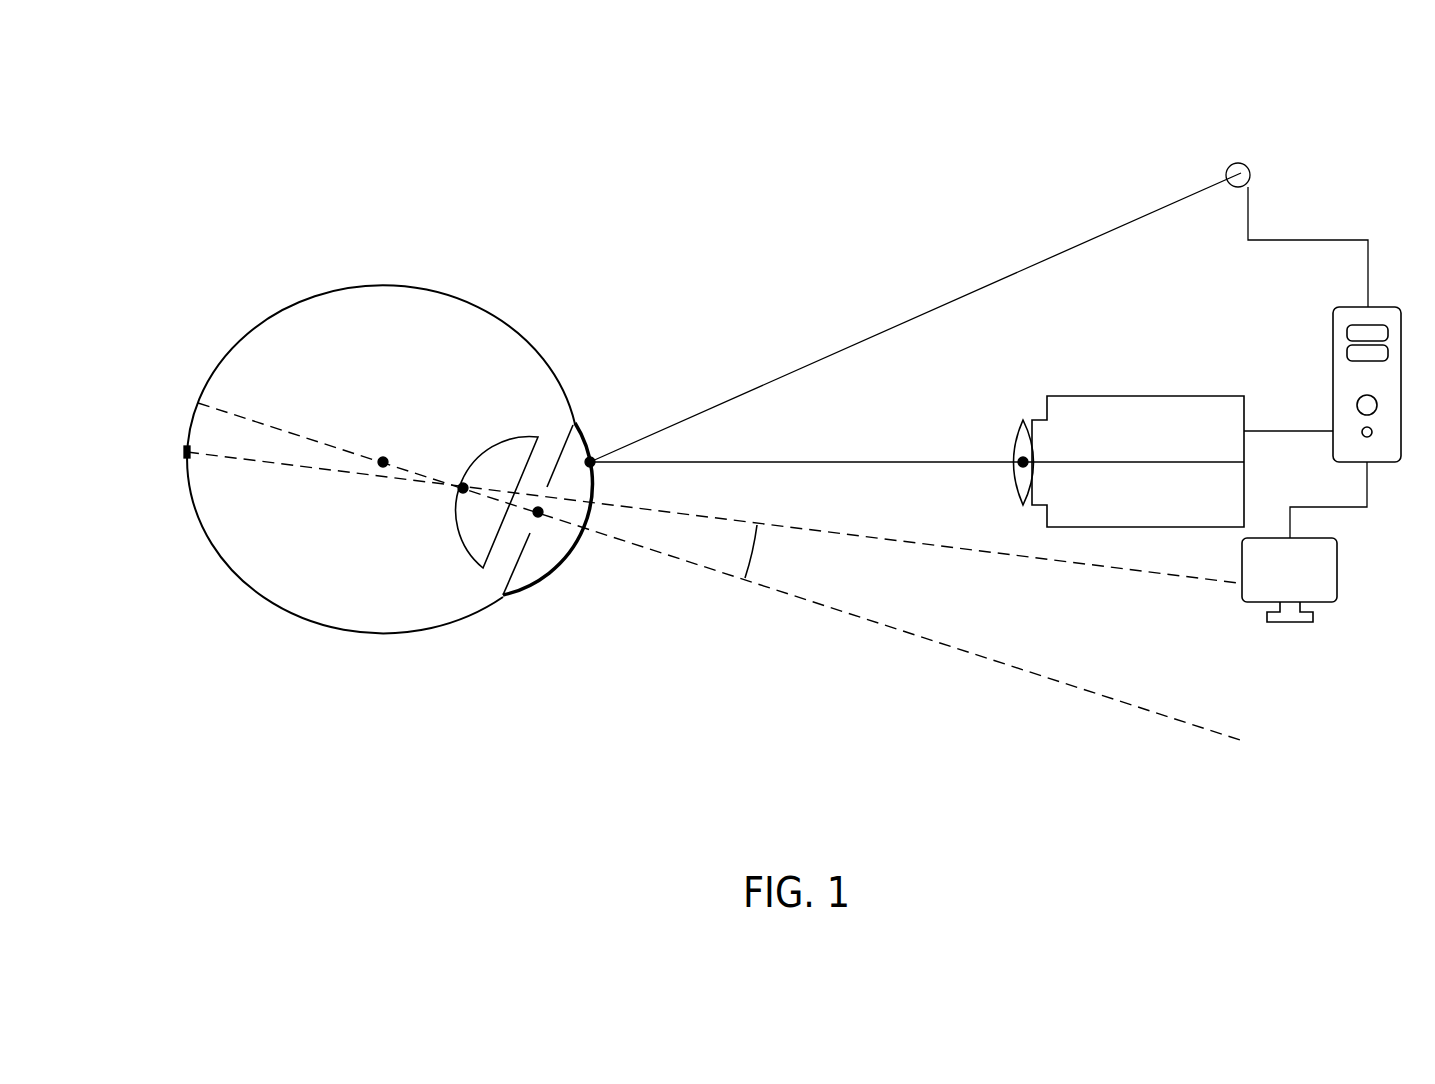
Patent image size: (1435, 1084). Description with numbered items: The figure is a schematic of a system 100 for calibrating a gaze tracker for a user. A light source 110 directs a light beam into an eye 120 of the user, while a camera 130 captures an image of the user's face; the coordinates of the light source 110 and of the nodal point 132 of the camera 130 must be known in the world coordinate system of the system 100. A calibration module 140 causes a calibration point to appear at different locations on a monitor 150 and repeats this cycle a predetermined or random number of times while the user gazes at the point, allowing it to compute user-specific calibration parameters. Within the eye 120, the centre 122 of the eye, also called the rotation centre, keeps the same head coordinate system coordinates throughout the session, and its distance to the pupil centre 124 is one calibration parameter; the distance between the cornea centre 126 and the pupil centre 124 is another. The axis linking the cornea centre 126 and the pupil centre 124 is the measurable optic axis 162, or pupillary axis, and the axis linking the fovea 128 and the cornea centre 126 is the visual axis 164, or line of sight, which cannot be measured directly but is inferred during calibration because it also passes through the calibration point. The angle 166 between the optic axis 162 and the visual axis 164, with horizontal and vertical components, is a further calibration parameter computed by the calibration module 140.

The system for calibrating a gaze tracker 100 is at (224, 140).
The light source 110 is at (1238, 163).
The eye 120 is at (200, 603).
The centre of the user's eye 122 is at (370, 452).
The pupil centre 124 is at (543, 527).
The cornea centre 126 is at (451, 475).
The fovea 128 is at (203, 464).
The camera 130 is at (1175, 396).
The nodal point 132 is at (1038, 447).
The calibration module 140 is at (1333, 375).
The monitor 150 is at (1340, 577).
The optic axis 162 is at (1163, 582).
The visual axis 164 is at (1195, 727).
The angle 166 is at (761, 563).